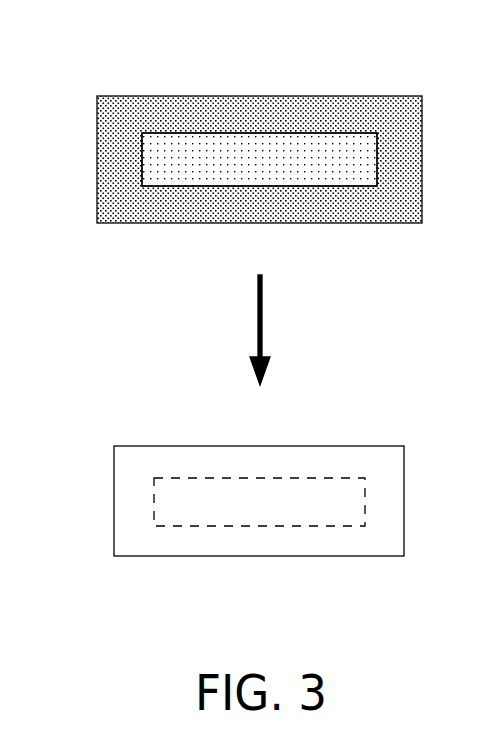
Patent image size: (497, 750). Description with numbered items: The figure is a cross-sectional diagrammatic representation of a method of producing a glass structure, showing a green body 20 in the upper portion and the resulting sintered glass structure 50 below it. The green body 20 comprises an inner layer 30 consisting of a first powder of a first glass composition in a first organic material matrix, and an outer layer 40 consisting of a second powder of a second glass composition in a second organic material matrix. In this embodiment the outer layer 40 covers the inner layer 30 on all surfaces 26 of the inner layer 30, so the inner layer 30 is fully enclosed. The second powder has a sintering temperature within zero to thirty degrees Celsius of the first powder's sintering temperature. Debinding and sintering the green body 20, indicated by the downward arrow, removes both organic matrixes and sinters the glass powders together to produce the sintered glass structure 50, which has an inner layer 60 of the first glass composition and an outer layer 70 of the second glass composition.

The green body 20 is at (180, 258).
The outer layer 40 is at (107, 135).
The inner layer 30 is at (272, 170).
The surfaces 26 is at (127, 165).
The sintered glass structure 50 is at (193, 589).
The outer layer 70 is at (137, 506).
The inner layer 60 is at (259, 502).